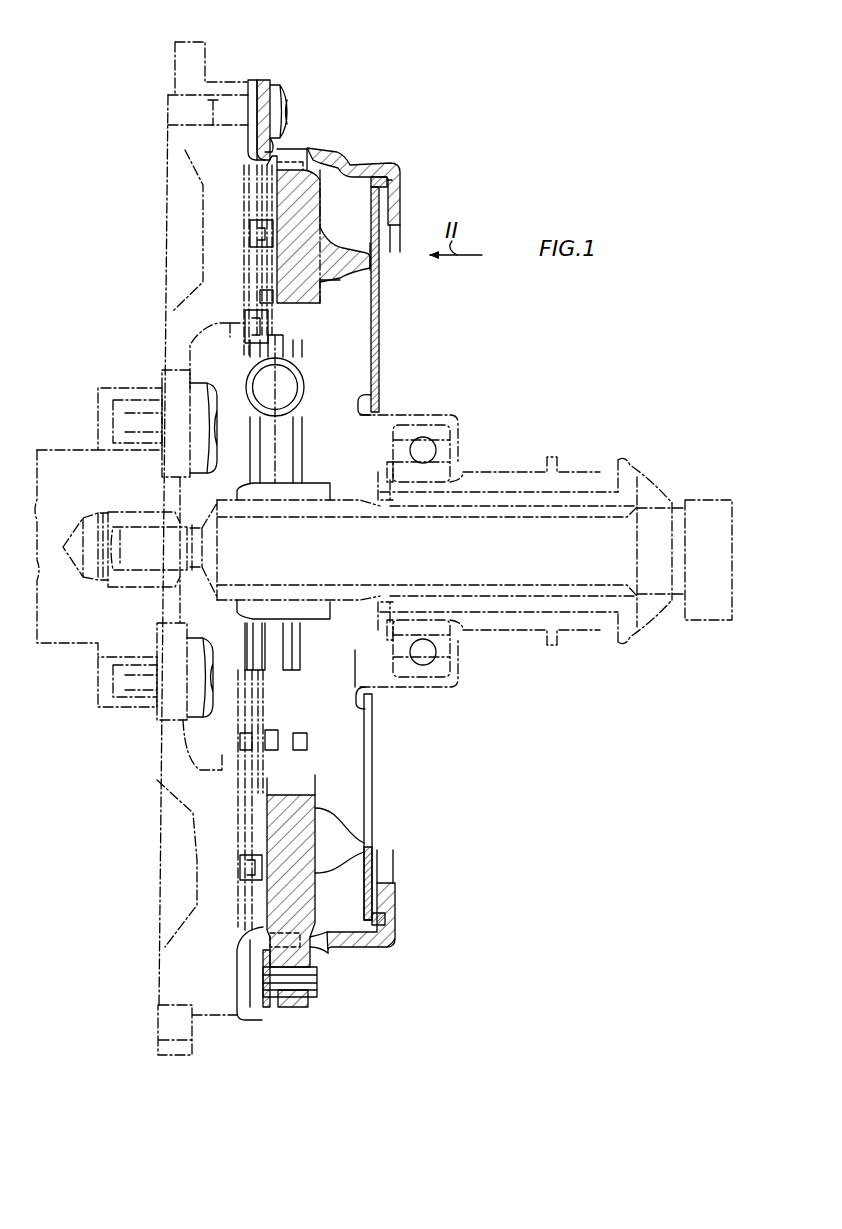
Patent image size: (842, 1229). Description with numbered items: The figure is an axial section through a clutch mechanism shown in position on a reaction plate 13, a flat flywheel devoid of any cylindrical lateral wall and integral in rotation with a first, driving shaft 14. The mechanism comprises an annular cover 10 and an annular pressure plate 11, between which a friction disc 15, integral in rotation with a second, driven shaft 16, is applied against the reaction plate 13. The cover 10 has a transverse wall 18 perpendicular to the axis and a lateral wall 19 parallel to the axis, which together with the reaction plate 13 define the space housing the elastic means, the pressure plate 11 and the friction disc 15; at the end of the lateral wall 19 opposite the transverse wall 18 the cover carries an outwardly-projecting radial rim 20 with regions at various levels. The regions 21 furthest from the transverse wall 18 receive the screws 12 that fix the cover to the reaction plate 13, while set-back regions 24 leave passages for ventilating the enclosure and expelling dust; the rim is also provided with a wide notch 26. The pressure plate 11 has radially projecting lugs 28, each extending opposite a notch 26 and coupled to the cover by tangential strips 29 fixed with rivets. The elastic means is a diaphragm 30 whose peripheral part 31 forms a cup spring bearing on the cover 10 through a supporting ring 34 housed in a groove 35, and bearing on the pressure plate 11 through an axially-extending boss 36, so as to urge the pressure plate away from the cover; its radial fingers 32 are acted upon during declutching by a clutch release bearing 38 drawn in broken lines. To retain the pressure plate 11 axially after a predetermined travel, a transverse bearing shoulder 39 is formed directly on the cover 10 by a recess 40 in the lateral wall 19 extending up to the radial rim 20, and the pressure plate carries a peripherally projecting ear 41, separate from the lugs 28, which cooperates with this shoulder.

The cover 10 is at (391, 956).
The pressure plate 11 is at (340, 228).
The screws 12 is at (286, 103).
The reaction plate 13 is at (157, 781).
The first shaft 14 is at (62, 655).
The friction disc 15 is at (246, 280).
The second shaft 16 is at (471, 597).
The transverse wall 18 is at (402, 208).
The lateral wall 19 is at (343, 161).
The radial rim 20 is at (266, 78).
The regions 21 is at (249, 88).
The regions 24 is at (272, 93).
The notch 26 is at (338, 953).
The radial lugs 28 is at (297, 1000).
The strips 29 is at (268, 1012).
The diaphragm 30 is at (381, 350).
The peripheral part 31 is at (379, 245).
The radial fingers 32 is at (373, 410).
The supporting ring 34 is at (377, 177).
The groove 35 is at (398, 184).
The boss 36 is at (350, 270).
The clutch release bearing 38 is at (460, 432).
The bearing shoulder 39 is at (270, 166).
The recess 40 is at (306, 162).
The ear 41 is at (287, 158).